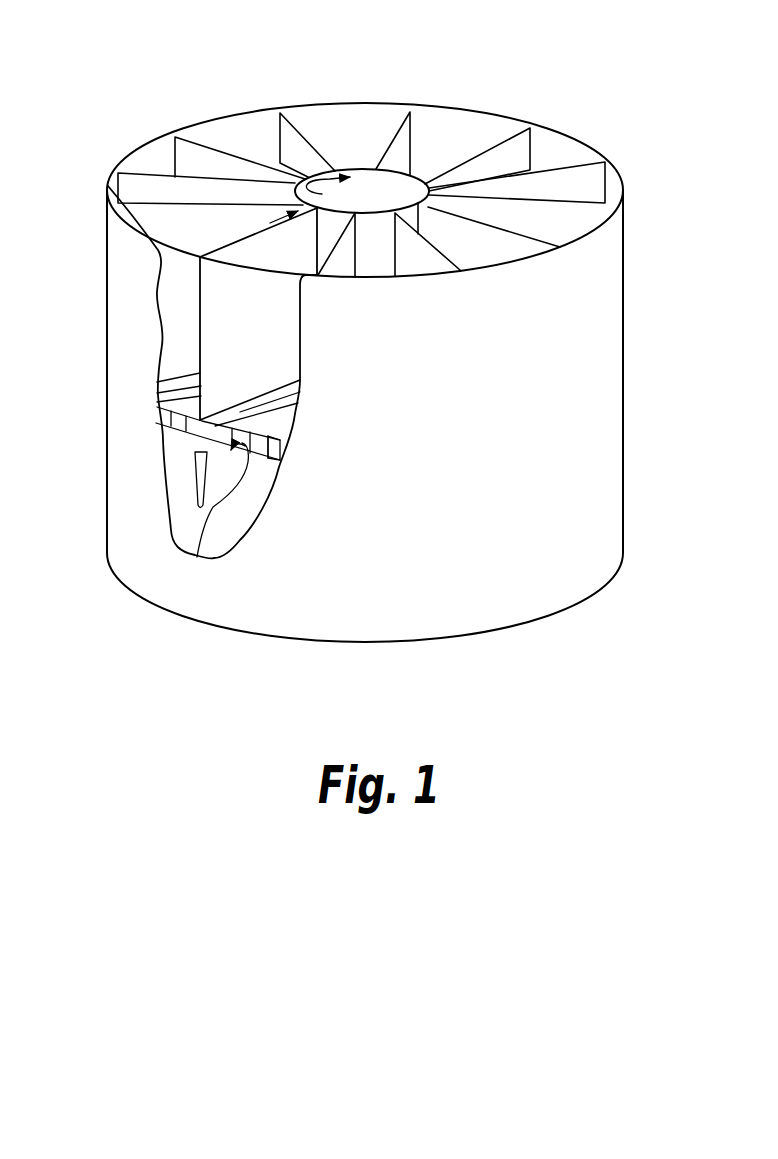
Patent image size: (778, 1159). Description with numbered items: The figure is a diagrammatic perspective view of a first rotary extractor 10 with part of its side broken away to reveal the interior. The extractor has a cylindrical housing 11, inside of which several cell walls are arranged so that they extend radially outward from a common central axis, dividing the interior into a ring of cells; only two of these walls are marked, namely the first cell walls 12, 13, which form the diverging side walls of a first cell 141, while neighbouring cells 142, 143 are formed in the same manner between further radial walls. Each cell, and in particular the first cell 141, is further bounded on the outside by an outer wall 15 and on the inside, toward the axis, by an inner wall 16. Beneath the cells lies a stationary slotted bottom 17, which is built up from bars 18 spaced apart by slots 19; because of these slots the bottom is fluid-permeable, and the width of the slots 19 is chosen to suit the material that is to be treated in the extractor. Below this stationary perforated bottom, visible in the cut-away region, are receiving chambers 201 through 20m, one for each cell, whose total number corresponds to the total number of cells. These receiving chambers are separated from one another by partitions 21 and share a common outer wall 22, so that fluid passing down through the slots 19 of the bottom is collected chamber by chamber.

The rotary extractor 10 is at (500, 73).
The housing 11 is at (582, 430).
The cell wall 12 is at (275, 297).
The cell wall 13 is at (226, 240).
The first cell 141 is at (174, 246).
The cell 142 is at (137, 188).
The cell 143 is at (253, 137).
The outer wall 15 is at (166, 273).
The inner wall 16 is at (110, 199).
The slotted bottom 17 is at (181, 384).
The bars 18 is at (157, 398).
The slots 19 is at (158, 382).
The first receiving chamber 201 is at (190, 445).
The last receiving chamber 20m is at (273, 463).
The partitions 21 is at (213, 460).
The common outer wall 22 is at (213, 508).